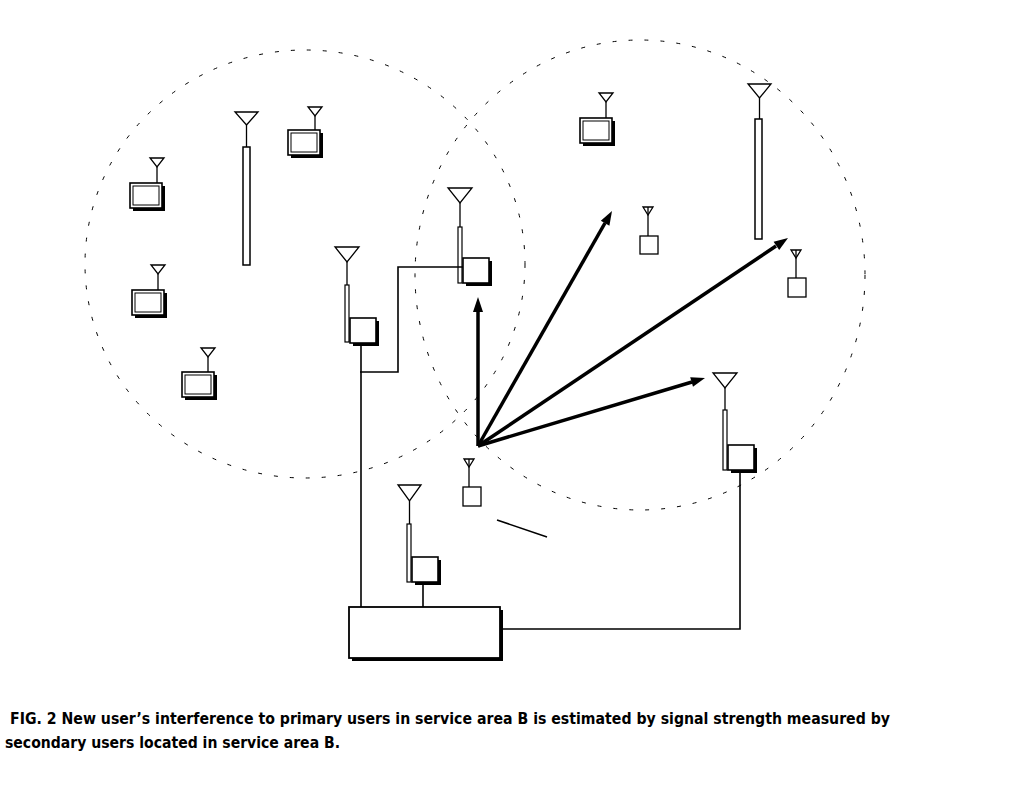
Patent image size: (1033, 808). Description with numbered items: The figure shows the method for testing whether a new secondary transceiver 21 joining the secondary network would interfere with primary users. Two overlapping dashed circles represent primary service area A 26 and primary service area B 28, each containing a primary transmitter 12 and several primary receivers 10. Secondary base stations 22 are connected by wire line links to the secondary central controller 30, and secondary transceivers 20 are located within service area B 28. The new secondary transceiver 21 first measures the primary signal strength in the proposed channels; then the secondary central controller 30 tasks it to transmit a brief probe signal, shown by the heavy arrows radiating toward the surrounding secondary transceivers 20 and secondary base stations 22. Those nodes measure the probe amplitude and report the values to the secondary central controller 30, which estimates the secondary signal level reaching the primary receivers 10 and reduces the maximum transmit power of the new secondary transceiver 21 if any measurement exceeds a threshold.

The primary receiver 10 is at (165, 200).
The primary transmitter 12 is at (251, 223).
The secondary transceiver 20 is at (659, 243).
The new secondary transceiver 21 is at (482, 494).
The secondary base station 22 is at (452, 198).
The primary service area A 26 is at (305, 244).
The primary service area B 28 is at (640, 258).
The secondary central controller 30 is at (348, 632).